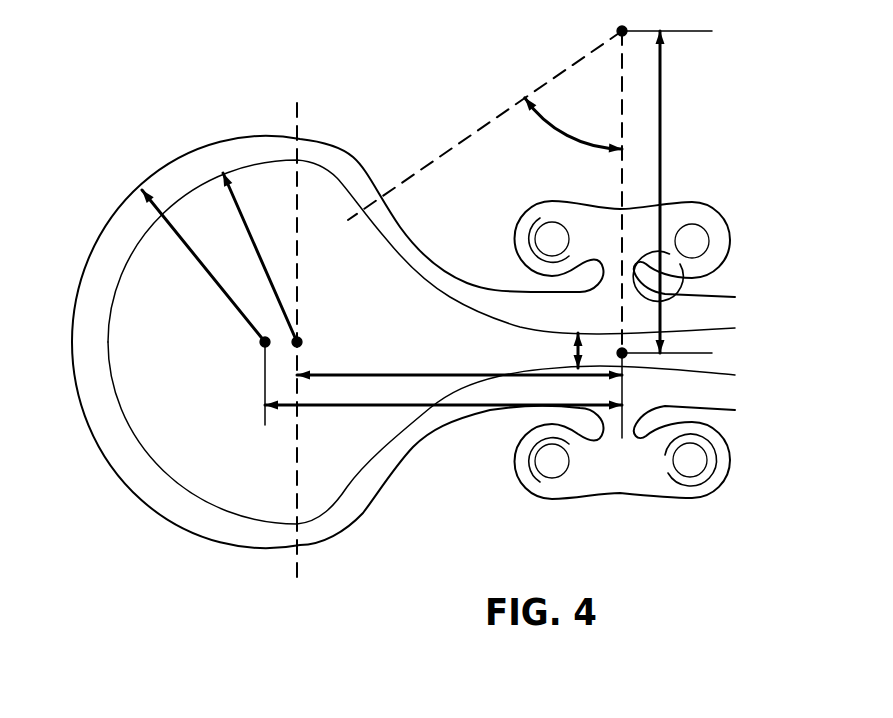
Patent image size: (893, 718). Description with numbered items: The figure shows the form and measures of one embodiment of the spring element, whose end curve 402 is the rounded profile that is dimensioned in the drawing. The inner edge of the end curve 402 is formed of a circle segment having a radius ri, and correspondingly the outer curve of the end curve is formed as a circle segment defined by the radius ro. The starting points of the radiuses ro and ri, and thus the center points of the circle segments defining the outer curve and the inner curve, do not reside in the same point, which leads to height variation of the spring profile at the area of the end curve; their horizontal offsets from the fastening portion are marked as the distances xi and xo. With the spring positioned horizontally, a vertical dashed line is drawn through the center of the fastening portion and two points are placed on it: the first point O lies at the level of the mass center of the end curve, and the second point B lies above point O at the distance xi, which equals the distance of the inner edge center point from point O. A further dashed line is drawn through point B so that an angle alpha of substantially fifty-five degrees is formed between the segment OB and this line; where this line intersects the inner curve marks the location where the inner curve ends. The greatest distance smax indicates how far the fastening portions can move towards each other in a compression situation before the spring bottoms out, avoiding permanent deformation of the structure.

The peripheral wall of the base member 402 is at (195, 168).
The second point B is at (659, 24).
The first point O is at (657, 346).
The radius of the outer curve ro is at (203, 266).
The radius of the inner edge ri is at (266, 257).
The distance between points O and B xi is at (492, 205).
The outer distance xo is at (443, 414).
The greatest compression distance smax is at (555, 350).
The angle between segment OB and the new line alpha is at (573, 129).